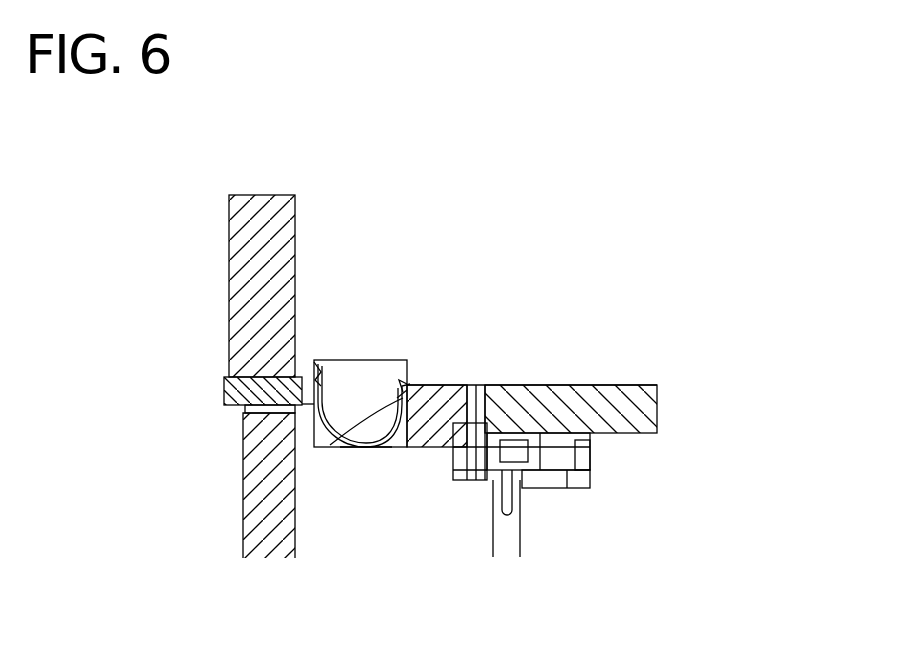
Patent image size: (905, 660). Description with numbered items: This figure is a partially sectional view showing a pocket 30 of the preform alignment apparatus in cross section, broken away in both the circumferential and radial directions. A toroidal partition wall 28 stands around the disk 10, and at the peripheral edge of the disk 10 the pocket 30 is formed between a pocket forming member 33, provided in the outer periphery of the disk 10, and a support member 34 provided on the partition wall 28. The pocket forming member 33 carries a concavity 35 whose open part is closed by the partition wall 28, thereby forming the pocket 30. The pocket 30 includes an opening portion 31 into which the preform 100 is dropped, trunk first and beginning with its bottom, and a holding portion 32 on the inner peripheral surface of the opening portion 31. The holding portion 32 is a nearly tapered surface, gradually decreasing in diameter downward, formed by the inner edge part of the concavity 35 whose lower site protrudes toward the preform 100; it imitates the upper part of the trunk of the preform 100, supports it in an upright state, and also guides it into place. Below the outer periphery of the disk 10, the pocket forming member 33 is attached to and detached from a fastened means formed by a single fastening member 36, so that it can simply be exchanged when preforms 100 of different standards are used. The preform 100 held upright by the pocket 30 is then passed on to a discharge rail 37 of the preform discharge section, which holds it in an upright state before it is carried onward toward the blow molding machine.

The partition wall 28 is at (237, 243).
The support member 34 is at (233, 390).
The pocket 30 is at (386, 347).
The concavity 35 is at (412, 372).
The holding portion 32 is at (398, 398).
The preform 100 is at (390, 444).
The opening portion 31 is at (359, 466).
The pocket forming member 33 is at (449, 383).
The disk 10 is at (527, 384).
The fastening member 36 is at (556, 459).
The discharge rail 37 is at (560, 489).